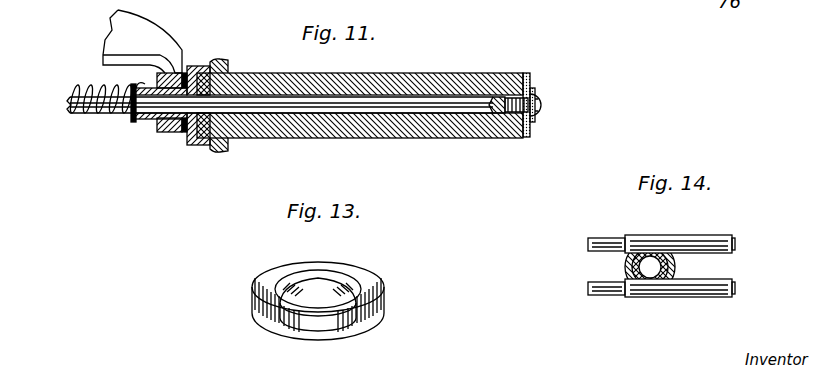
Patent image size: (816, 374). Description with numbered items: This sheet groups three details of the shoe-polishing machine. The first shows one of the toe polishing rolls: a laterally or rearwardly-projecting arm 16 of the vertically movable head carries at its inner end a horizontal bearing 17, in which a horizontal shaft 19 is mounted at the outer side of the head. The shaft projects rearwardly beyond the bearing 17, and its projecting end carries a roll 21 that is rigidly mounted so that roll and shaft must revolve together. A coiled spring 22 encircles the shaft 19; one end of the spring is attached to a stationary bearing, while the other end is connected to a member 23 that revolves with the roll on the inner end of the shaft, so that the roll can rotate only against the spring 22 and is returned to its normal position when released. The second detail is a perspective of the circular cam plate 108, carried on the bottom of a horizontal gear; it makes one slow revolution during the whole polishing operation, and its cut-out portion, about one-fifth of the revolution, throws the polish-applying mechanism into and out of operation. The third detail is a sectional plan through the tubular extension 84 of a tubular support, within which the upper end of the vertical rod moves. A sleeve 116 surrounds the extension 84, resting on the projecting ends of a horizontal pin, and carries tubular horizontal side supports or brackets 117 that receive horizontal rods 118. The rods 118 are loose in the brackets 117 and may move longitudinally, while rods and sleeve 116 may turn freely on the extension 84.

In FIG. 11, the arm 16 is at (118, 20).
In FIG. 11, the horizontal bearing 17 is at (166, 133).
In FIG. 11, the horizontal shaft 19 is at (70, 104).
In FIG. 11, the roll 21 is at (353, 118).
In FIG. 11, the coiled spring 22 is at (103, 114).
In FIG. 11, the member 23 is at (142, 119).
In FIG. 13, the circular cam plate 108 is at (370, 321).
In FIG. 14, the tubular extension 84 is at (638, 280).
In FIG. 14, the sleeve 116 is at (638, 246).
In FIG. 14, the tubular horizontal side supports or brackets 117 is at (698, 240).
In FIG. 14, the horizontal rods 118 is at (586, 244).